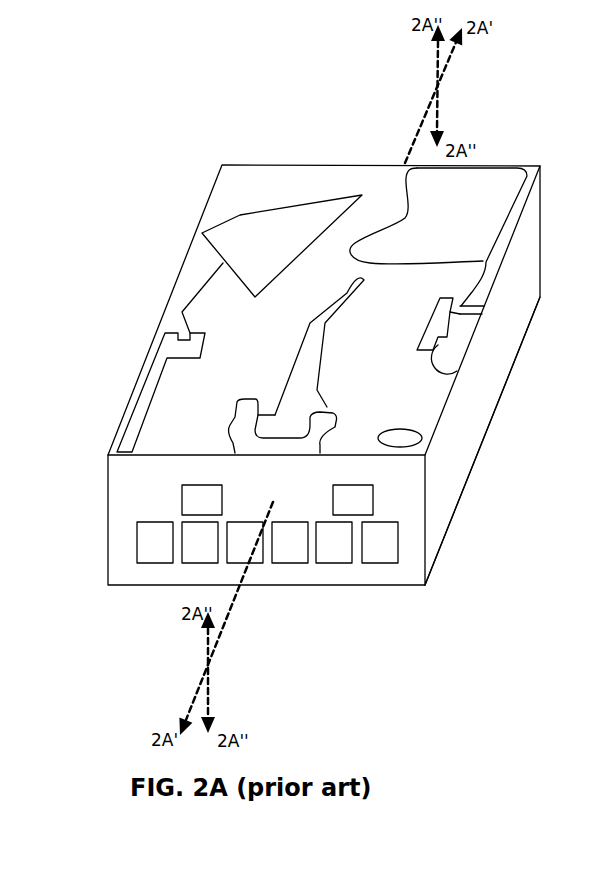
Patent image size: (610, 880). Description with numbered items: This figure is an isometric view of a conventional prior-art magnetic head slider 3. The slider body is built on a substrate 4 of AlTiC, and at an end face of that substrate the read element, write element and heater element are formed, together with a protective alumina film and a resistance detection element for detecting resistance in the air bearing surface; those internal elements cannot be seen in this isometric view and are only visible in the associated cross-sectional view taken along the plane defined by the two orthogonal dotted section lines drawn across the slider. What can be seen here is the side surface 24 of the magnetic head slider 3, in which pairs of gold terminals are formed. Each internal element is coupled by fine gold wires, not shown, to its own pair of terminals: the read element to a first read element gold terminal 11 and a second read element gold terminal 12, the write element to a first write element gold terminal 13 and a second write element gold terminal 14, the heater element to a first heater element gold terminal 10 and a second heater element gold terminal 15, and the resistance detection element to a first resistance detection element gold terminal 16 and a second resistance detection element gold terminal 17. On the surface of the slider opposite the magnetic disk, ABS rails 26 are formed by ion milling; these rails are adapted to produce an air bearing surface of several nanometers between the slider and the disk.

The magnetic head slider 3 is at (150, 122).
The substrate 4 is at (530, 360).
The first heater element gold terminal 10 is at (142, 554).
The first read element gold terminal 11 is at (187, 554).
The second read element gold terminal 12 is at (232, 554).
The first write element gold terminal 13 is at (277, 554).
The second write element gold terminal 14 is at (321, 554).
The second heater element gold terminal 15 is at (367, 554).
The first resistance detection element gold terminal 16 is at (189, 511).
The second resistance detection element gold terminal 17 is at (340, 511).
The side surface 24 is at (101, 498).
The ABS rails 26 is at (243, 211).